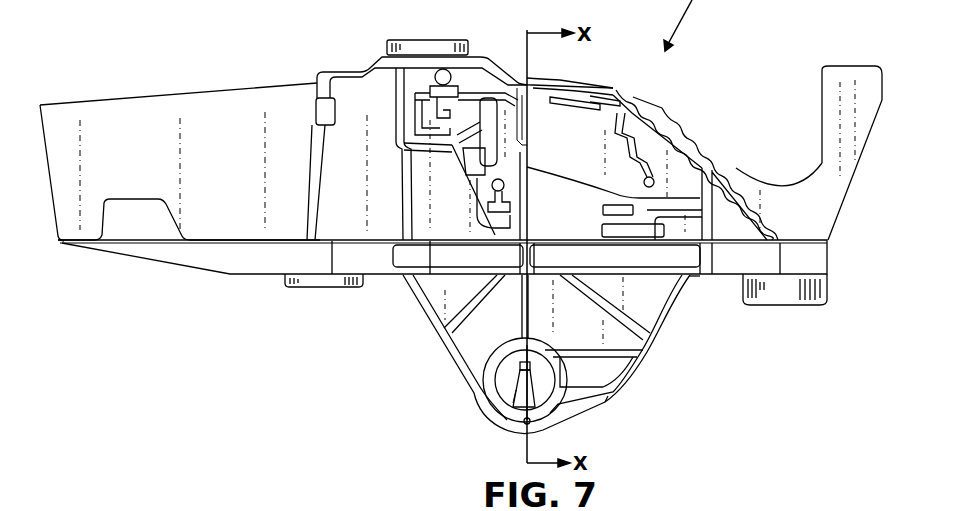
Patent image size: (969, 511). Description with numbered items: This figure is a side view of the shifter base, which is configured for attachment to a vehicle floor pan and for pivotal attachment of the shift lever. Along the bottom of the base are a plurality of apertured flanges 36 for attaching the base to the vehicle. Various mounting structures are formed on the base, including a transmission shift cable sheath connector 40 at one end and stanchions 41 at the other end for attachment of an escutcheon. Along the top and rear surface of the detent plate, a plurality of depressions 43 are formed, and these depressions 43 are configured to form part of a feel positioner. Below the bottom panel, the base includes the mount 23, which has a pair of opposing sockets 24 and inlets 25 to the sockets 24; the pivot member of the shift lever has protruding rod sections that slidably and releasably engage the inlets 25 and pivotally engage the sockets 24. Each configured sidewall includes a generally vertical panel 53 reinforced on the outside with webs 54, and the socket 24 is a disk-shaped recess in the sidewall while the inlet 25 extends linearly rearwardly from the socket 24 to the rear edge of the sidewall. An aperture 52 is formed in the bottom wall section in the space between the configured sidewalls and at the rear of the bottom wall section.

The mount 23 is at (542, 362).
The socket 24 is at (485, 417).
The inlet 25 is at (612, 398).
The apertured flange 36 is at (302, 288).
The transmission shift cable sheath connector 40 is at (50, 180).
The stanchion 41 is at (827, 76).
The depression 43 is at (718, 148).
The aperture 52 is at (662, 325).
The vertical panel 53 is at (472, 348).
The web 54 is at (520, 337).